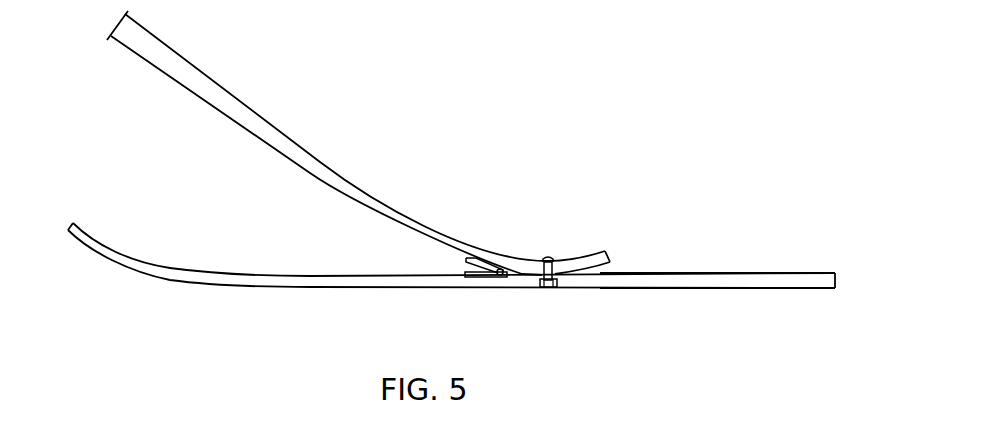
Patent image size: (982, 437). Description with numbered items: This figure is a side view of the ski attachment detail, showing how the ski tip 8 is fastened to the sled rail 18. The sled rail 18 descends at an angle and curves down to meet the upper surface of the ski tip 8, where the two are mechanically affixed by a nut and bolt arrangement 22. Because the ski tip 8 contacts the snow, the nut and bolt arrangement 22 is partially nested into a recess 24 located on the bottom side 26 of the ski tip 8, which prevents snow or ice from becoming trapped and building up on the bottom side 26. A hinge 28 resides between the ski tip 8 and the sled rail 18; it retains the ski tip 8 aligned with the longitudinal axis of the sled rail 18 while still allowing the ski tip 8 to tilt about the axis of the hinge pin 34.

The ski tip 8 is at (160, 268).
The sled rail 18 is at (215, 83).
The nut and bolt arrangement 22 is at (547, 258).
The recess 24 is at (553, 288).
The bottom side 26 is at (743, 288).
The hinge 28 is at (466, 258).
The hinge pin 34 is at (501, 275).